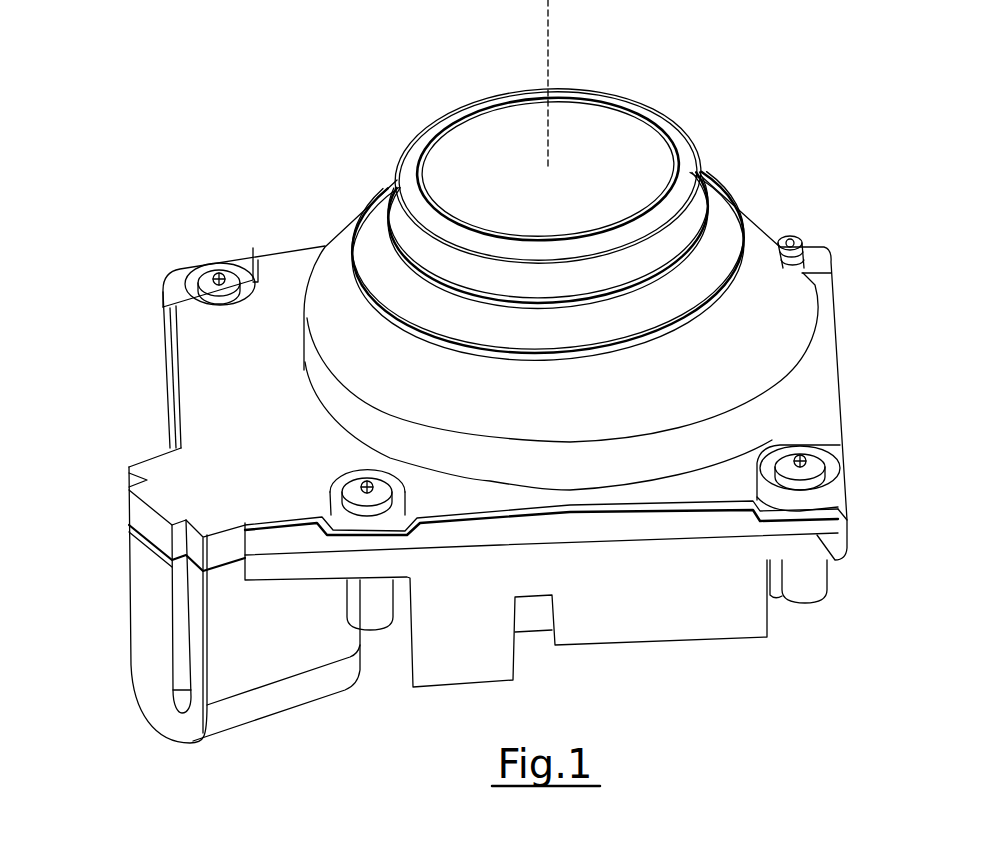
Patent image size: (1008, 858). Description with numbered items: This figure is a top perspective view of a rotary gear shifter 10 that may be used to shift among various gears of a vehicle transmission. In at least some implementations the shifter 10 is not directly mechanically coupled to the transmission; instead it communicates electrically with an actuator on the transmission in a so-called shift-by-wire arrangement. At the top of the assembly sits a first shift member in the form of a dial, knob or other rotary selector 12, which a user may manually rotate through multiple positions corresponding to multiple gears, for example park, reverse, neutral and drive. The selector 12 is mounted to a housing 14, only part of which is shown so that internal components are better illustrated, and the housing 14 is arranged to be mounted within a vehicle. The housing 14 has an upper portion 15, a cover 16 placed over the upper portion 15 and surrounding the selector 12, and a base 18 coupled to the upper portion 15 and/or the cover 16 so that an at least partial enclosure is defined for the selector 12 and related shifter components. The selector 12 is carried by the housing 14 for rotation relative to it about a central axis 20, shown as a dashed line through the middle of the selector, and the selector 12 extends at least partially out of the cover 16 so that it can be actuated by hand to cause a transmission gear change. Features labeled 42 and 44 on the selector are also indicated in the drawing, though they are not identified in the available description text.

The rotary gear shifter 10 is at (835, 150).
The rotary selector 12 is at (696, 131).
The housing 14 is at (120, 558).
The upper portion 15 is at (137, 517).
The cover 16 is at (192, 392).
The base 18 is at (280, 695).
The central axis 20 is at (549, 41).
The lens barrel 42 is at (388, 168).
The lens element 44 is at (442, 153).